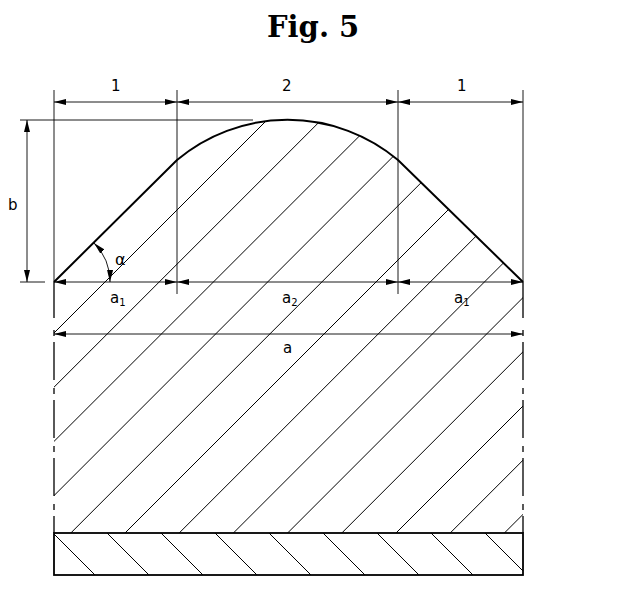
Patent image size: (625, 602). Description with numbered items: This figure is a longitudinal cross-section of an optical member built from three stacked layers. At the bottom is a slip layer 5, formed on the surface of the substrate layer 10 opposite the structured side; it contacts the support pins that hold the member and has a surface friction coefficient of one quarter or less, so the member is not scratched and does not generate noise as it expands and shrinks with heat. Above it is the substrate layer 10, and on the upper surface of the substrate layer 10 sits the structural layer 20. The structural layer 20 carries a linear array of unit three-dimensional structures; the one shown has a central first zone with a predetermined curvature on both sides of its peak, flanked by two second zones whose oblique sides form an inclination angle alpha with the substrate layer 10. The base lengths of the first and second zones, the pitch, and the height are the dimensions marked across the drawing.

The structural layer 20 is at (537, 115).
The substrate layer 10 is at (537, 283).
The slip layer 5 is at (537, 534).